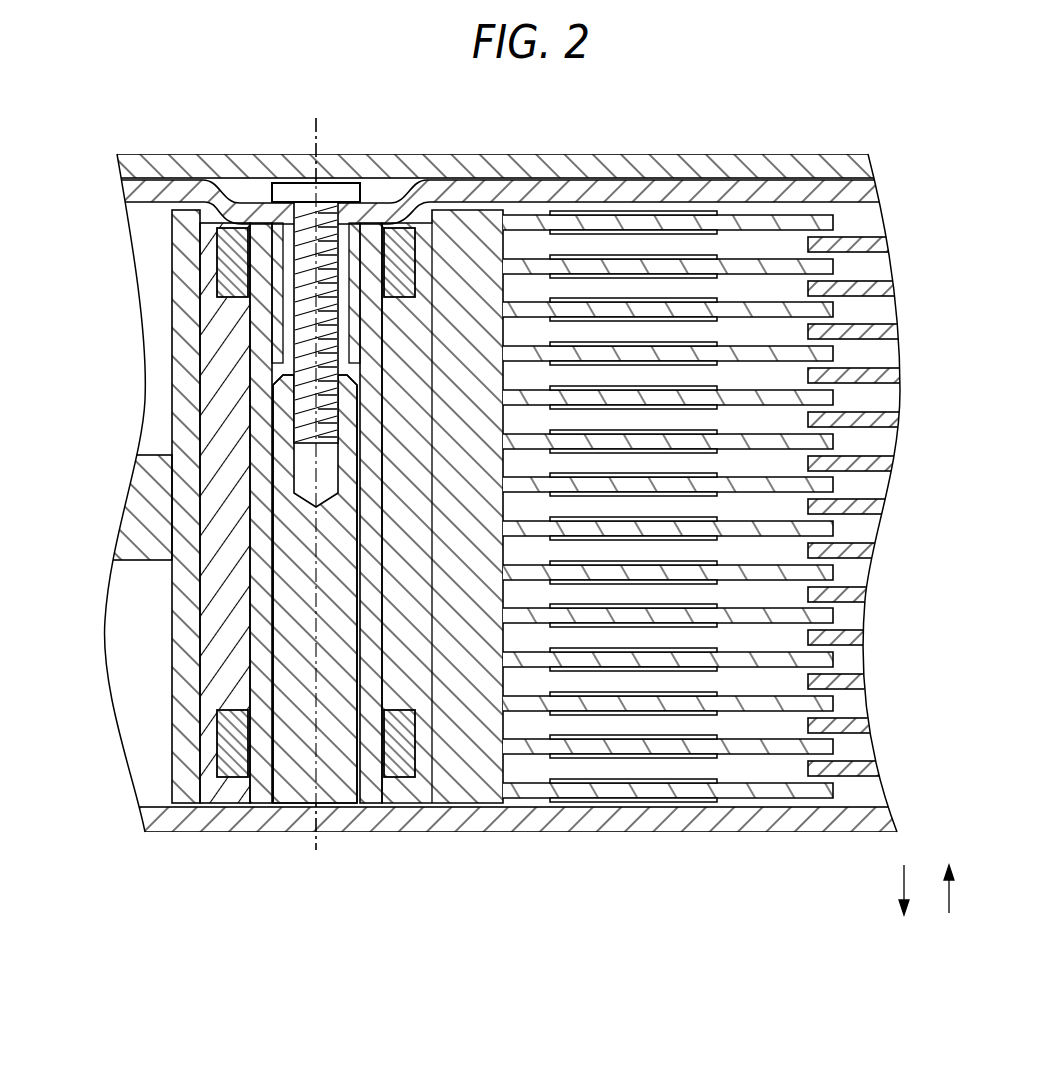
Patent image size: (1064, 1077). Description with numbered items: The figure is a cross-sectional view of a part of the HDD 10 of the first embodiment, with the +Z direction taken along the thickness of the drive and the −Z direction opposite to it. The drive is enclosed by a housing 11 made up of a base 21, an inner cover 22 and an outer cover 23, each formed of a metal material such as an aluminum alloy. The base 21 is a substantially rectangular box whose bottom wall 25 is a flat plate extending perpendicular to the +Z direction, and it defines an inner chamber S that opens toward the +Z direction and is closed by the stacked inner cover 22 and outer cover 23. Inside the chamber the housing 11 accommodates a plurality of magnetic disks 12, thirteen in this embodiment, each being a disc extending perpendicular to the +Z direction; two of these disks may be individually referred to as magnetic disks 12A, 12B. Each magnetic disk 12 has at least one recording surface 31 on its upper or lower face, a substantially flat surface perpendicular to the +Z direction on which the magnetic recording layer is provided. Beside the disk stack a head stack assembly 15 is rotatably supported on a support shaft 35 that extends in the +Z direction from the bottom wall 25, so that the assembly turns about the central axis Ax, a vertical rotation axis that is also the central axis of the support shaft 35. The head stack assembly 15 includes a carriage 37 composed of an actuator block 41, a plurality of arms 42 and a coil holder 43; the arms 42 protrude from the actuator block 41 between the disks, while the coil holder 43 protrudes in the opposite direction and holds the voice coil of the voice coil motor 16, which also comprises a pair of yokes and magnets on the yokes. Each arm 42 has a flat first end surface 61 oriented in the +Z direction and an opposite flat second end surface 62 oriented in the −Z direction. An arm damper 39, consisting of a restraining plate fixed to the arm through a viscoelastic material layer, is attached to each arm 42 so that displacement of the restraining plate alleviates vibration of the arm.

The HDD 10 is at (130, 137).
The housing 11 is at (160, 832).
The magnetic disk 12 is at (887, 288).
The magnetic disk 12A is at (880, 461).
The magnetic disk 12B is at (873, 505).
The head stack assembly 15 is at (130, 506).
The voice coil motor 16 is at (150, 452).
The base 21 is at (505, 846).
The inner cover 22 is at (726, 166).
The outer cover 23 is at (666, 192).
The bottom wall 25 is at (600, 833).
The recording surface 31 is at (855, 242).
The support shaft 35 is at (260, 323).
The carriage 37 is at (130, 506).
The arm damper 39 is at (617, 211).
The actuator block 41 is at (172, 267).
The arm 42 is at (821, 216).
The coil holder 43 is at (138, 495).
The first end surface 61 is at (790, 477).
The second end surface 62 is at (833, 533).
The inner chamber S is at (150, 226).
The central axis Ax is at (322, 147).